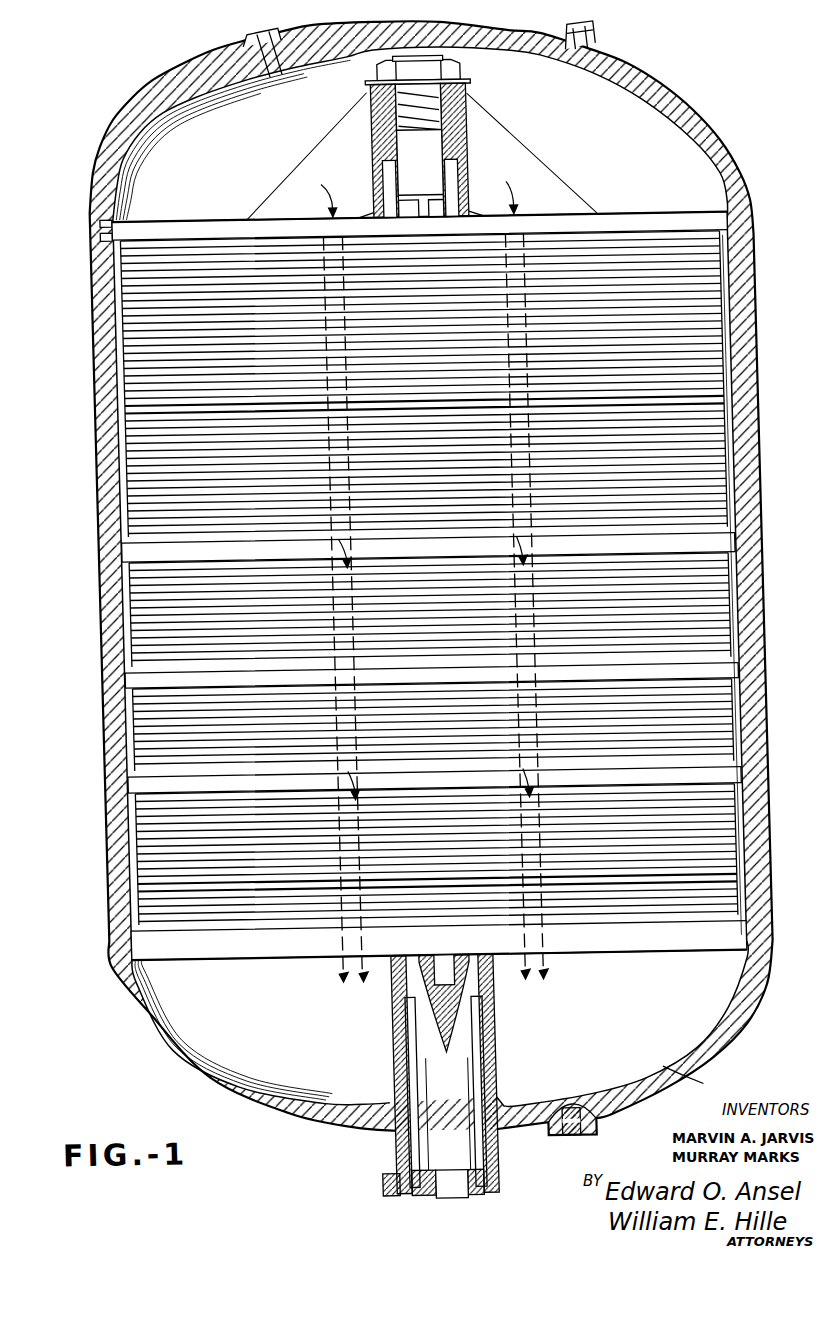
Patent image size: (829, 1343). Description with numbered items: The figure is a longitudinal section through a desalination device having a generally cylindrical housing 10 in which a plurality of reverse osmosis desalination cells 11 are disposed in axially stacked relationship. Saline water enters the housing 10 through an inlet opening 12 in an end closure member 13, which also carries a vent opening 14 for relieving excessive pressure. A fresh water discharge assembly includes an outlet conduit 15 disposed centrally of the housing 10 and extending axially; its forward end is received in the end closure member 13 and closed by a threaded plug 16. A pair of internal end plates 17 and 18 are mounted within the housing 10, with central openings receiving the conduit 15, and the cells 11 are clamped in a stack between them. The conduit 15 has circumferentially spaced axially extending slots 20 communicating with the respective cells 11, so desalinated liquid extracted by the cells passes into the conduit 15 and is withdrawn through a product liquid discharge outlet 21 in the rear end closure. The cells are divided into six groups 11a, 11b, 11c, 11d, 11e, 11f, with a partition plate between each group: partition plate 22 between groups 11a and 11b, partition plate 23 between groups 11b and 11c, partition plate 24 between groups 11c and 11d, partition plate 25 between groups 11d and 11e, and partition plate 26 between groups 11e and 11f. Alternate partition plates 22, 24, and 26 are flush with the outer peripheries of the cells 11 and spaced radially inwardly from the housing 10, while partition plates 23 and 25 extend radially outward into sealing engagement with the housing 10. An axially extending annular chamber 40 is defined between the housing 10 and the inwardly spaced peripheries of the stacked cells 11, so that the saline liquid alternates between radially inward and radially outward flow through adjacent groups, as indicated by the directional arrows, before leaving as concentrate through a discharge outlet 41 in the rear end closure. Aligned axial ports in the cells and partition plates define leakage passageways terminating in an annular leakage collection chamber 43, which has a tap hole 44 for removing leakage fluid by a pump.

The housing 10 is at (752, 292).
The reverse osmosis desalination cells 11 is at (735, 610).
The group of cells 11a is at (130, 316).
The group of cells 11b is at (130, 470).
The group of cells 11c is at (130, 620).
The group of cells 11d is at (130, 727).
The group of cells 11e is at (130, 828).
The group of cells 11f is at (130, 920).
The inlet opening 12 is at (259, 31).
The end closure member 13 is at (210, 62).
The vent opening 14 is at (599, 30).
The outlet conduit 15 is at (470, 208).
The plug 16 is at (476, 83).
The internal end plate 17 is at (642, 222).
The internal end plate 18 is at (618, 948).
The slots 20 is at (521, 292).
The product liquid discharge outlet 21 is at (432, 1198).
The partition plate 22 is at (122, 402).
The partition plate 23 is at (125, 547).
The partition plate 24 is at (125, 677).
The partition plate 25 is at (125, 783).
The partition plate 26 is at (130, 876).
The annular chamber 40 is at (740, 467).
The discharge outlet 41 is at (545, 1137).
The annular leakage collection chamber 43 is at (378, 1130).
The tap hole 44 is at (366, 1195).